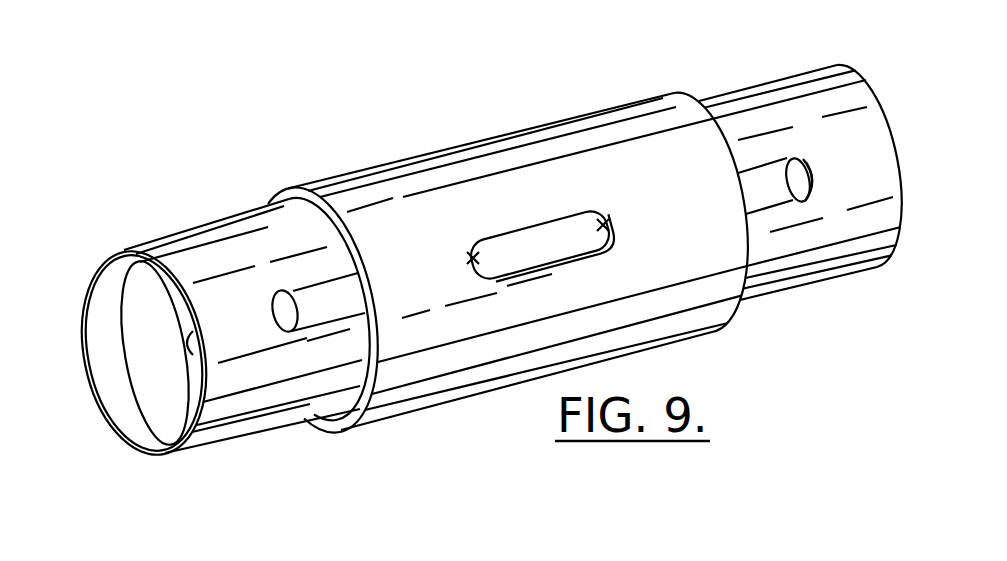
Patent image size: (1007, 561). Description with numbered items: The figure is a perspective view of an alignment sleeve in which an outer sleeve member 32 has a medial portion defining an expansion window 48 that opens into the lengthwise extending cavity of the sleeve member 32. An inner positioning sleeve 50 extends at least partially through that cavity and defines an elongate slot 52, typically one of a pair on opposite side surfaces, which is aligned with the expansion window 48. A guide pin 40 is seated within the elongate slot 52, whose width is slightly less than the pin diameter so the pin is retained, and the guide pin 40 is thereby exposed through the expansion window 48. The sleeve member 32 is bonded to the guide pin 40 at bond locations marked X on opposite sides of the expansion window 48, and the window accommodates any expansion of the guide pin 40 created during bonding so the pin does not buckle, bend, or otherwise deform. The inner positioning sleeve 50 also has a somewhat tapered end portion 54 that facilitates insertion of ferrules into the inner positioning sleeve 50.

The sleeve member 32 is at (661, 90).
The guide pin 40 is at (306, 297).
The expansion window 48 is at (512, 246).
The inner positioning sleeve 50 is at (778, 85).
The elongate slot 52 is at (807, 200).
The end portion 54 is at (112, 286).